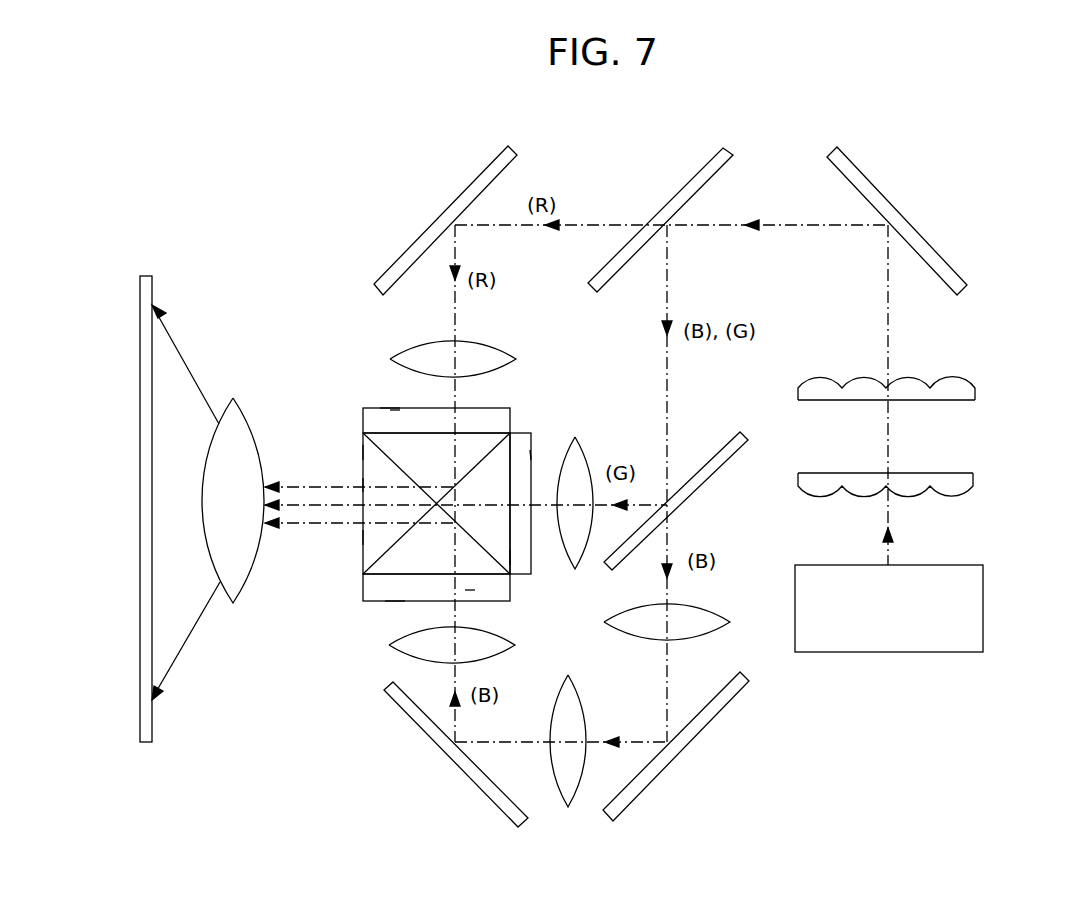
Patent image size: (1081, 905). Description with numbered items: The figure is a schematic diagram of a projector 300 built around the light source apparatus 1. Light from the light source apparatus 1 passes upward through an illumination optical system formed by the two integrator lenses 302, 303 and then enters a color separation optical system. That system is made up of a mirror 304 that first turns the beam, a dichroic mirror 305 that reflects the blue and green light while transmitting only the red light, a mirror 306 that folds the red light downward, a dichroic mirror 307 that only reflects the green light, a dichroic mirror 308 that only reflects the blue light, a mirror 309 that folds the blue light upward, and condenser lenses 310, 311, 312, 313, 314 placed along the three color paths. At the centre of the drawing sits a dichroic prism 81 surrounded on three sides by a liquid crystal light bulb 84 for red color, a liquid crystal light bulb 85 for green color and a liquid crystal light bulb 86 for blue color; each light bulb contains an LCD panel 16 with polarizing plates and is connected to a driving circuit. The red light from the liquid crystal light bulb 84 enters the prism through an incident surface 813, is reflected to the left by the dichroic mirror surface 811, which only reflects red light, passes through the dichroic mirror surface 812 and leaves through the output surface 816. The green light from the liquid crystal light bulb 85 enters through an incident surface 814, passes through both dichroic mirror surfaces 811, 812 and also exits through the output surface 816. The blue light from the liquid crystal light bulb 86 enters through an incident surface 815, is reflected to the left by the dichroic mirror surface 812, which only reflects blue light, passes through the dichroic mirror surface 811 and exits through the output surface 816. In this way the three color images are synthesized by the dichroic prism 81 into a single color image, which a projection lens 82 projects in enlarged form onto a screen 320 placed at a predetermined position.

The light source apparatus 1 is at (950, 563).
The LCD panel 16 is at (398, 412).
The dichroic prism 81 is at (372, 553).
The projection lens 82 is at (245, 420).
The liquid crystal light bulb for red color 84 is at (364, 425).
The liquid crystal light bulb for green color 85 is at (522, 440).
The liquid crystal light bulb for blue color 86 is at (500, 588).
The projector 300 is at (968, 212).
The integrator lens 302 is at (960, 488).
The integrator lens 303 is at (960, 388).
The mirror 304 is at (860, 185).
The dichroic mirror 305 is at (695, 178).
The mirror 306 is at (468, 190).
The dichroic mirror 307 is at (700, 468).
The dichroic mirror 308 is at (727, 693).
The mirror 309 is at (424, 724).
The condenser lens 310 is at (413, 352).
The condenser lens 311 is at (578, 458).
The condenser lens 312 is at (690, 620).
The condenser lens 313 is at (575, 785).
The condenser lens 314 is at (415, 650).
The screen 320 is at (150, 740).
The dichroic mirror surface 811 is at (372, 535).
The dichroic mirror surface 812 is at (376, 450).
The incident surface 813 is at (392, 448).
The incident surface 814 is at (505, 560).
The incident surface 815 is at (395, 582).
The output surface 816 is at (365, 478).